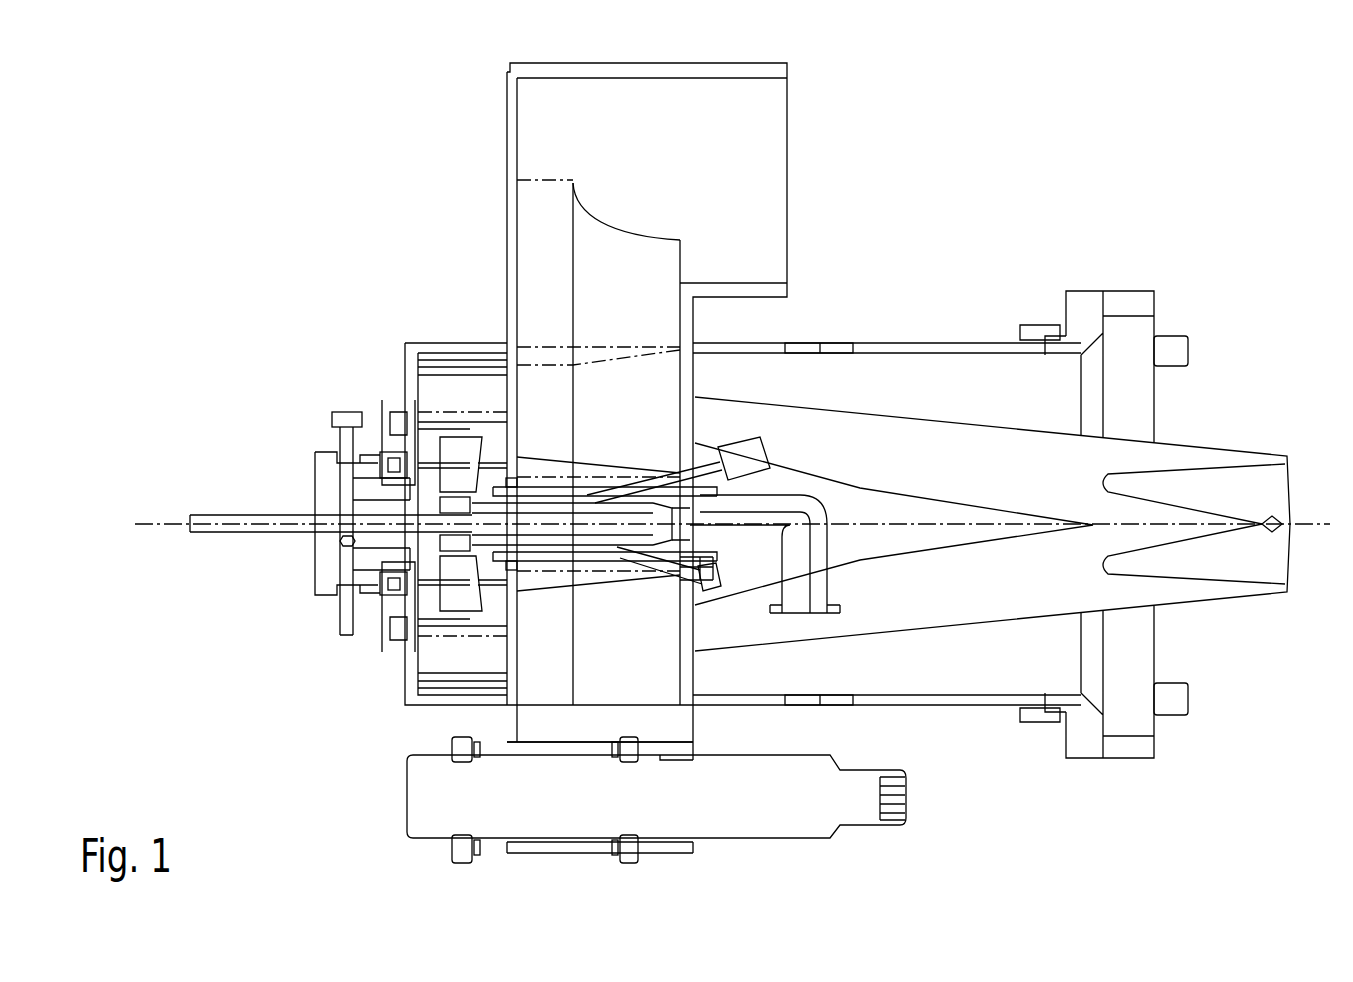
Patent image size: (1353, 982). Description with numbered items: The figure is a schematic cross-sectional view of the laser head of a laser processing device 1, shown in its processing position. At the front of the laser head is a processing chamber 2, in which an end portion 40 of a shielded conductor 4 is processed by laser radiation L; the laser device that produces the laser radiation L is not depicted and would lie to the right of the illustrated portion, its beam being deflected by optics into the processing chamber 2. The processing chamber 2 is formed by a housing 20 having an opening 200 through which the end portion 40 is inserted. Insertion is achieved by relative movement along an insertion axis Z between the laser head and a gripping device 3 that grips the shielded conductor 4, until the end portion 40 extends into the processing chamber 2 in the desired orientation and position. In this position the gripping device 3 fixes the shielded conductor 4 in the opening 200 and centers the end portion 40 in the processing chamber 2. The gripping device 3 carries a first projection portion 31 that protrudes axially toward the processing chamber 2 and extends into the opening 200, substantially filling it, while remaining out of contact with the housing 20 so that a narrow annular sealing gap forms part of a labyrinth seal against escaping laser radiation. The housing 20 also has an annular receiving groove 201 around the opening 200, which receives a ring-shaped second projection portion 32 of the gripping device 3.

The laser processing device 1 is at (946, 121).
The processing chamber 2 is at (433, 565).
The gripping device 3 is at (328, 490).
The shielded conductor 4 is at (236, 534).
The housing 20 is at (426, 352).
The first projection portion 31 is at (395, 505).
The second projection portion 32 is at (396, 465).
The end portion 40 is at (460, 518).
The opening 200 is at (402, 500).
The receiving groove 201 is at (420, 443).
The laser radiation L is at (462, 468).
The insertion axis Z is at (146, 527).